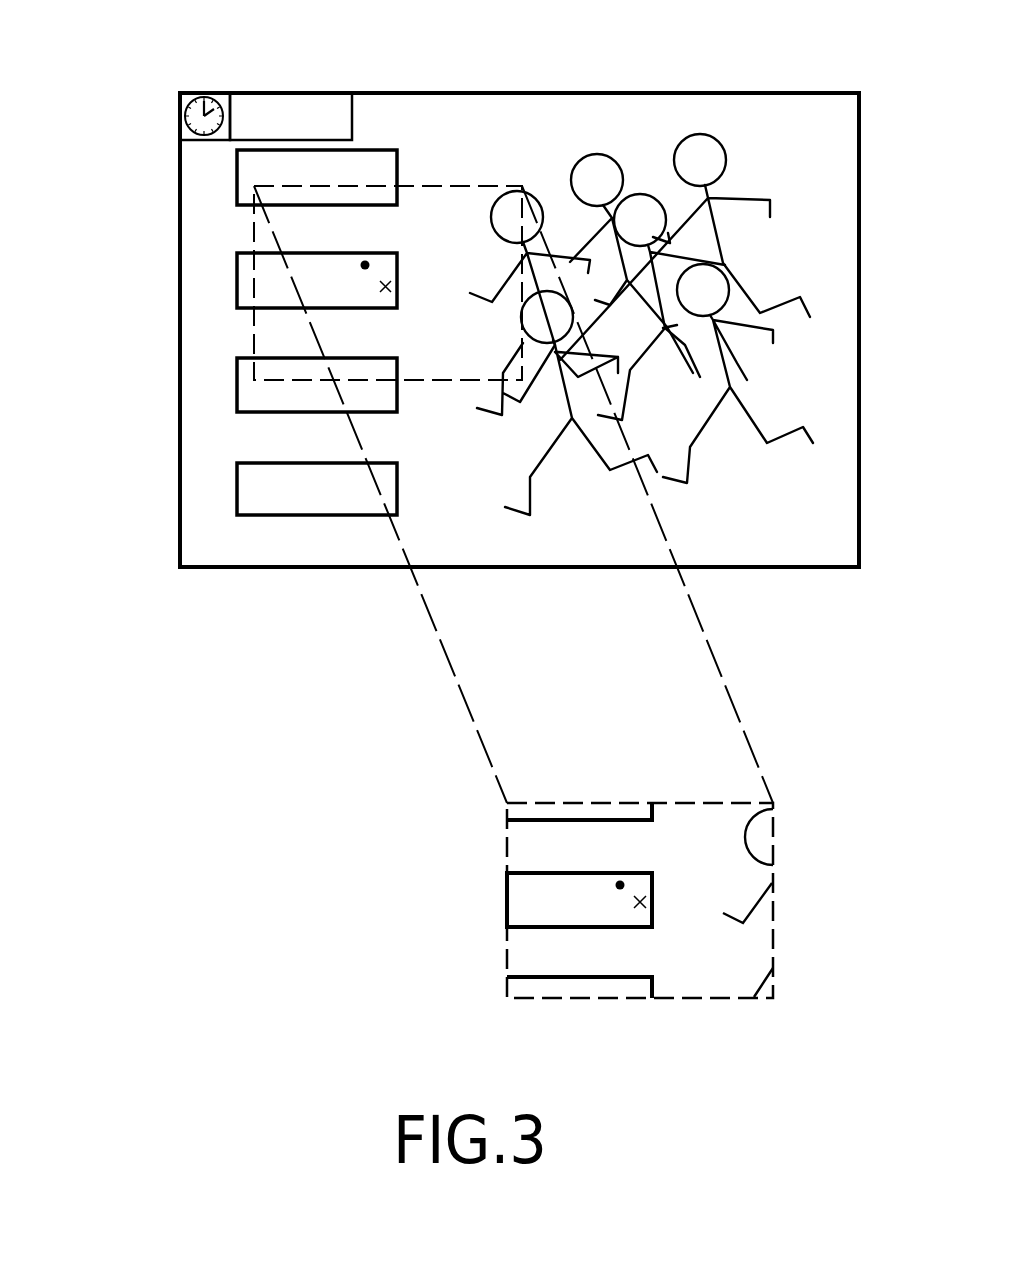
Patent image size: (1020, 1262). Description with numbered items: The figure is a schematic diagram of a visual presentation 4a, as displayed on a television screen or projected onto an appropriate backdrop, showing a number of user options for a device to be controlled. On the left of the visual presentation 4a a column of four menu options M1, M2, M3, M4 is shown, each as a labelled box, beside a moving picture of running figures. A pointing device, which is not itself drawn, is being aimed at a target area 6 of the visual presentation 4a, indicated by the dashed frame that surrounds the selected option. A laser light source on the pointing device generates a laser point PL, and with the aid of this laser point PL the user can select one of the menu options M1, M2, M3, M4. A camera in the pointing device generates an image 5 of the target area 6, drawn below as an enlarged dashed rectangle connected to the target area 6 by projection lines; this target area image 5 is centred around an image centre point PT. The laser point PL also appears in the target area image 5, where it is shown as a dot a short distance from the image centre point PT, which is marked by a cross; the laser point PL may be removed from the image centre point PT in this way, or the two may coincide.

The visual presentation 4a is at (703, 92).
The menu option M1 is at (263, 171).
The menu option M2 is at (263, 281).
The menu option M3 is at (263, 389).
The menu option M4 is at (263, 499).
The target area 6 is at (458, 185).
The target area image 5 is at (587, 861).
The laser point PL is at (620, 885).
The image centre point PT is at (524, 917).